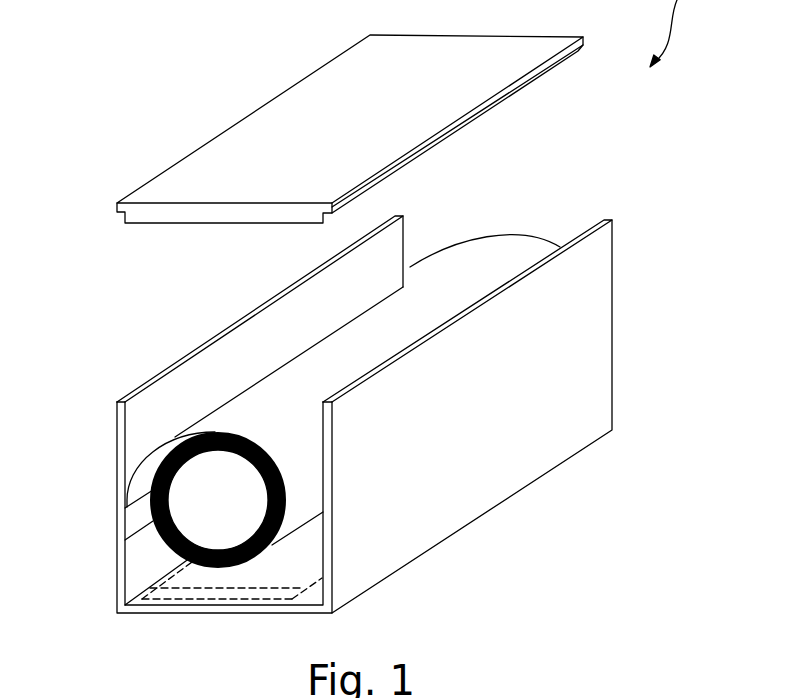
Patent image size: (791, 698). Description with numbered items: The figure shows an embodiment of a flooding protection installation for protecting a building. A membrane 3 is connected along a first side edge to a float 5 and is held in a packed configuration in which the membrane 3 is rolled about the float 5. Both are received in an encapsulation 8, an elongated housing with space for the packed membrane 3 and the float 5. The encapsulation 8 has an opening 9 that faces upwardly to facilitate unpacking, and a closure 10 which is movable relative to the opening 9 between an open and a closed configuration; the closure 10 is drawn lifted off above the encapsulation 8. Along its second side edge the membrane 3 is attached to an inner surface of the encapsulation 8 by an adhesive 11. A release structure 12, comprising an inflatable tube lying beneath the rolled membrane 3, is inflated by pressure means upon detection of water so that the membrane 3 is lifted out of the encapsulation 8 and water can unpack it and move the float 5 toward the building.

The membrane 3 is at (288, 483).
The float 5 is at (198, 530).
The encapsulation 8 is at (469, 419).
The opening 9 is at (472, 222).
The closure 10 is at (343, 121).
The adhesive 11 is at (127, 522).
The release structure 12 is at (223, 578).